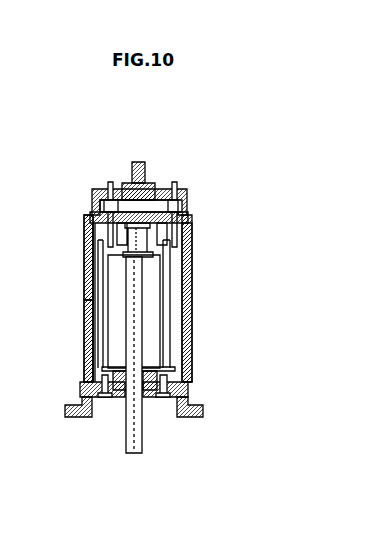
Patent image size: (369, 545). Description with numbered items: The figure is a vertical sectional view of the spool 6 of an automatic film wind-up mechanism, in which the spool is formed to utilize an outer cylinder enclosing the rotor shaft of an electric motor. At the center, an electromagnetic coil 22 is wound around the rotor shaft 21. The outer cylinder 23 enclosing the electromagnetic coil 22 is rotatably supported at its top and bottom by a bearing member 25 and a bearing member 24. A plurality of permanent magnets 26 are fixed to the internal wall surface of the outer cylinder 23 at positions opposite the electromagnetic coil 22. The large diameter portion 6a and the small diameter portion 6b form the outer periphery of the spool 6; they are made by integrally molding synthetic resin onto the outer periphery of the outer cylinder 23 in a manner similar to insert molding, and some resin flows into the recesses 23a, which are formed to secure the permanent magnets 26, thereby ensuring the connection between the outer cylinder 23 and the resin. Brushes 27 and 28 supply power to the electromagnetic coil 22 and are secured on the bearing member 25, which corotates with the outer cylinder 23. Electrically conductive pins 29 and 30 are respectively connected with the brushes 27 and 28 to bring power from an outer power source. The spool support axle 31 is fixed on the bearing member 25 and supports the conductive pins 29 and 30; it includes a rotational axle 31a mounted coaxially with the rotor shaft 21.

The spool 6 is at (200, 213).
The large diameter portion 6a is at (84, 238).
The small diameter portion 6b is at (84, 352).
The rotor shaft 21 is at (130, 453).
The electromagnetic coil 22 is at (145, 328).
The outer cylinder 23 is at (185, 311).
The recesses 23a is at (96, 310).
The bearing member 24 is at (178, 370).
The bearing member 25 is at (150, 205).
The permanent magnets 26 is at (102, 280).
The brush 27 is at (90, 213).
The brush 28 is at (192, 232).
The electrically conductive pin 29 is at (110, 182).
The electrically conductive pin 30 is at (176, 182).
The spool support axle 31 is at (148, 190).
The rotational axle 31a is at (139, 162).